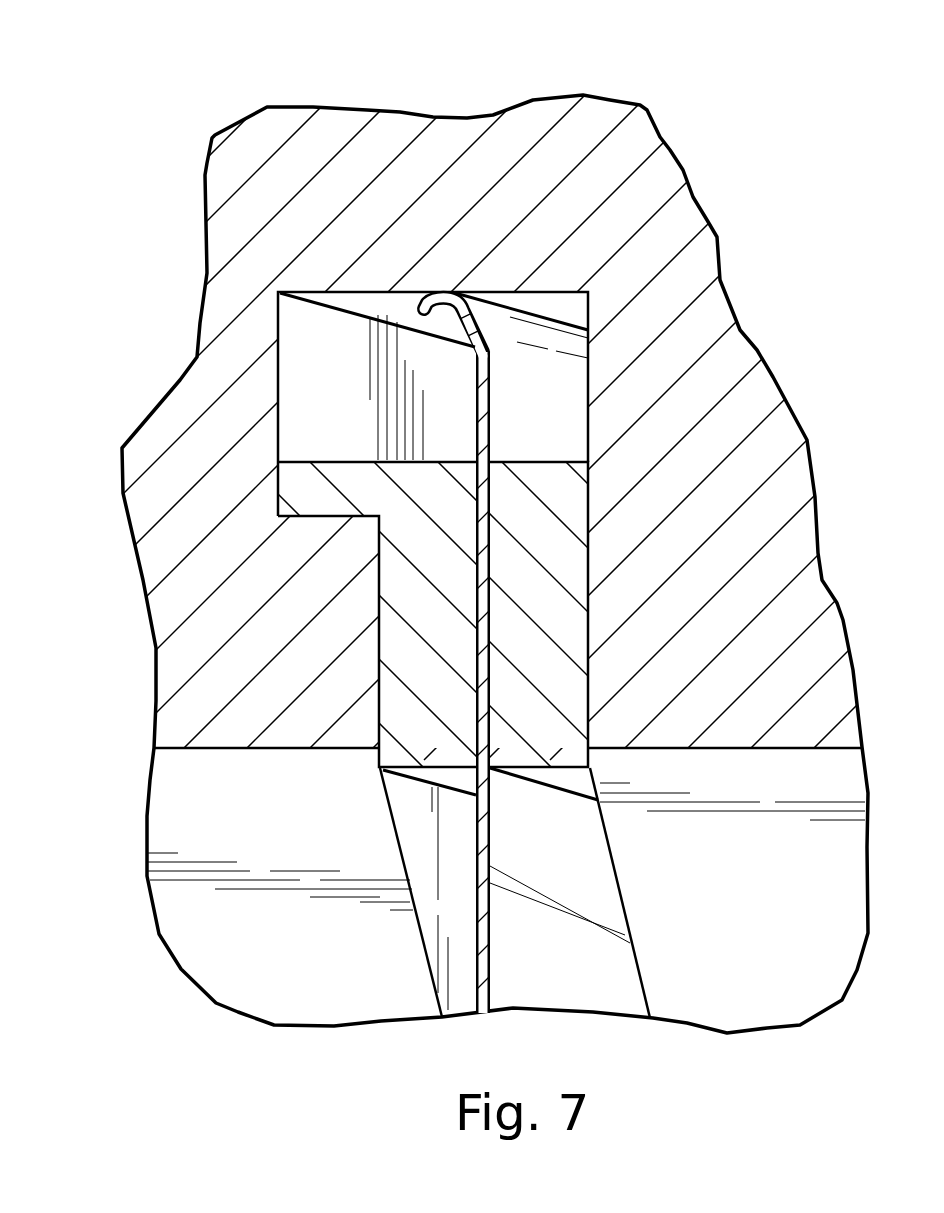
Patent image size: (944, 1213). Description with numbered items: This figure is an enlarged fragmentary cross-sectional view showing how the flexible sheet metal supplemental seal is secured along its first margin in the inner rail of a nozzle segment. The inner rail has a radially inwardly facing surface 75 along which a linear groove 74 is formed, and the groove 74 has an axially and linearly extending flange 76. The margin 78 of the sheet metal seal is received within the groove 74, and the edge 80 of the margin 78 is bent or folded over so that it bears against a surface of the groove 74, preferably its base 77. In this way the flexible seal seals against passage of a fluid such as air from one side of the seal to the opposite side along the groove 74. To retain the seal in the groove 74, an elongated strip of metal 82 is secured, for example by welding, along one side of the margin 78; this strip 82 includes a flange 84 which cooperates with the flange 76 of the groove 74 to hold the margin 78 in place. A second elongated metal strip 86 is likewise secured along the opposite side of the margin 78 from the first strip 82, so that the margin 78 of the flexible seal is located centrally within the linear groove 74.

The groove 74 is at (310, 370).
The radially inwardly facing surface 75 is at (207, 749).
The flange 76 is at (277, 639).
The base 77 is at (367, 300).
The margin 78 is at (542, 725).
The edge 80 is at (424, 296).
The elongated strip of metal 82 is at (432, 685).
The flange 84 is at (318, 492).
The elongated metal strip 86 is at (483, 565).